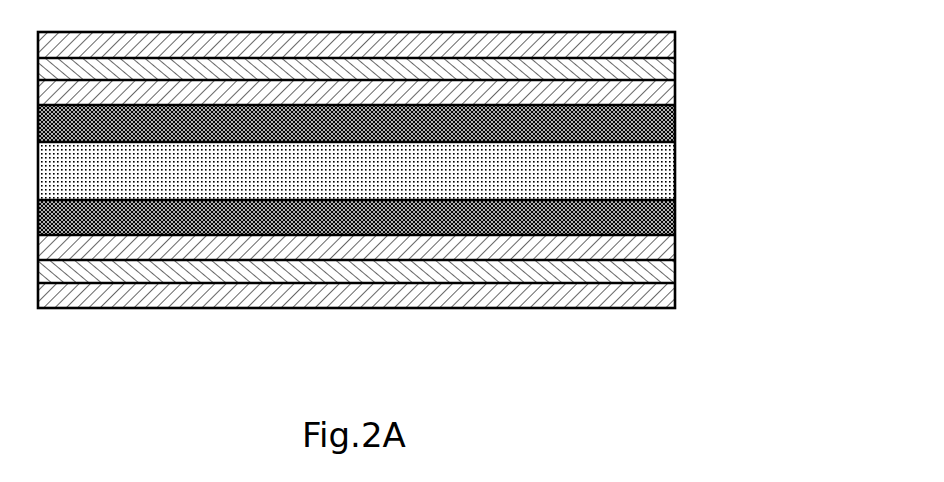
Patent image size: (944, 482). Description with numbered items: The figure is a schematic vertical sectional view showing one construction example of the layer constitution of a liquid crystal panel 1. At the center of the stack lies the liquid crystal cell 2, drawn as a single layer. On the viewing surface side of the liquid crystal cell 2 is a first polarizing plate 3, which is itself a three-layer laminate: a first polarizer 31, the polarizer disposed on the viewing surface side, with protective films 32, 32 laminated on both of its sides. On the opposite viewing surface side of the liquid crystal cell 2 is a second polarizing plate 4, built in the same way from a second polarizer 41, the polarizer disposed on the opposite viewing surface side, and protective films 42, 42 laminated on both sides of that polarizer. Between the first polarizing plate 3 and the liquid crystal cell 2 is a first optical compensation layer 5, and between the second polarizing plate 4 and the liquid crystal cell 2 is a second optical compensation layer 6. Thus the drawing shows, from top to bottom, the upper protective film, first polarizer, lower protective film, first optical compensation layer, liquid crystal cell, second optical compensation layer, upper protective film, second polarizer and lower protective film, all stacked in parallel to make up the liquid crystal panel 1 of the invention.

The liquid crystal panel 1 is at (423, 198).
The liquid crystal cell 2 is at (653, 170).
The first polarizing plate 3 is at (412, 60).
The first polarizer 31 is at (660, 67).
The protective film 32 is at (660, 43).
The second polarizing plate 4 is at (423, 284).
The second polarizer 41 is at (663, 270).
The protective film 42 is at (653, 247).
The first optical compensation layer 5 is at (663, 122).
The second optical compensation layer 6 is at (662, 216).